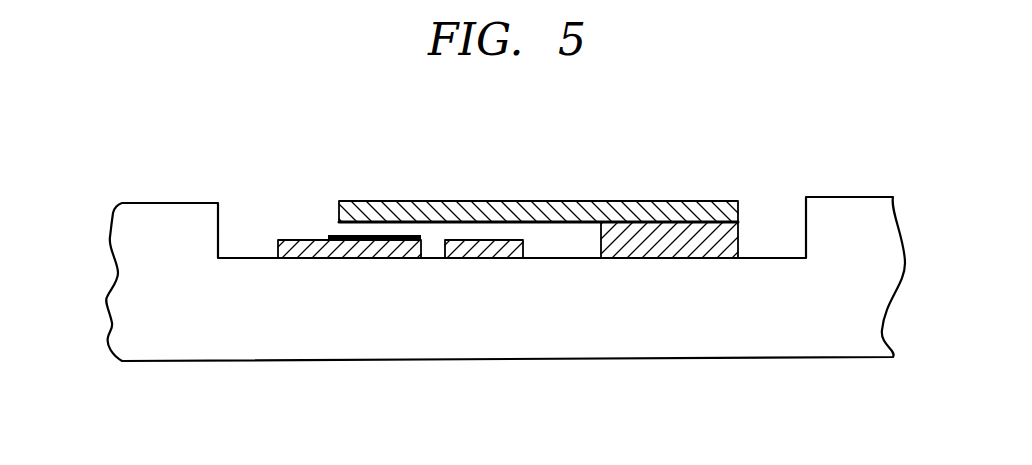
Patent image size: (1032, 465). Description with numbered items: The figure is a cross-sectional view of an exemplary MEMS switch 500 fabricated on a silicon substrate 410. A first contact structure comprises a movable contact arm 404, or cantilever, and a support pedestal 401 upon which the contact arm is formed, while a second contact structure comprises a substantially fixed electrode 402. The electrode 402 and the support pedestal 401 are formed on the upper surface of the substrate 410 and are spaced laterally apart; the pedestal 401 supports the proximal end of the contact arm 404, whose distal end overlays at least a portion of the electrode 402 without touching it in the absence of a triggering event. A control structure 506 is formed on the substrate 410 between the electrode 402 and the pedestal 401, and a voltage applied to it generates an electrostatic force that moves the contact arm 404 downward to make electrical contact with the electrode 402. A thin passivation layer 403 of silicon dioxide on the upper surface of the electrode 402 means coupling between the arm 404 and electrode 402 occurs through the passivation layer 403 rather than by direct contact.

The MEMS switch 500 is at (772, 92).
The silicon substrate 410 is at (113, 295).
The support pedestal 401 is at (741, 233).
The fixed electrode 402 is at (291, 240).
The passivation layer 403 is at (391, 237).
The movable contact arm 404 is at (541, 208).
The control structure 506 is at (484, 247).